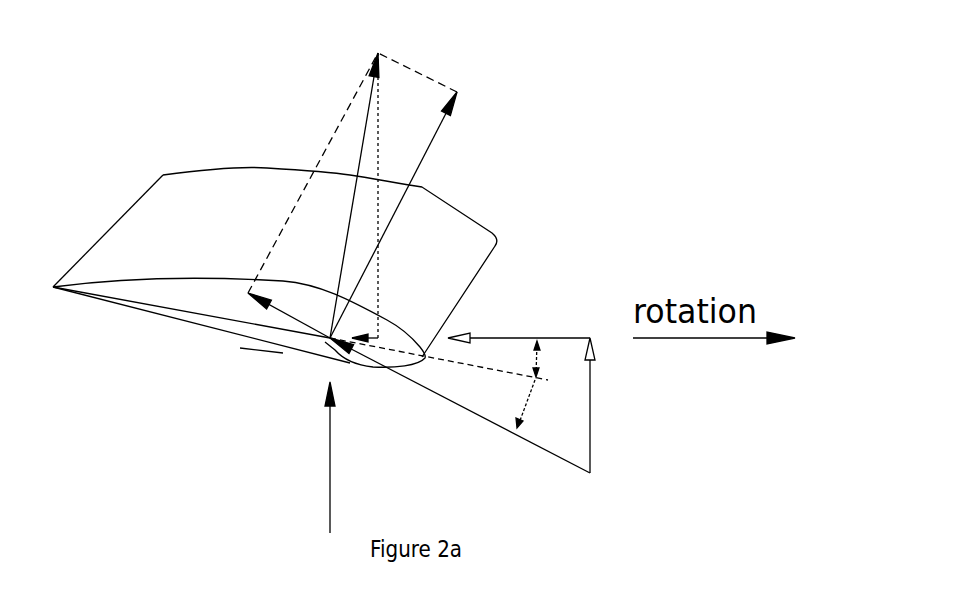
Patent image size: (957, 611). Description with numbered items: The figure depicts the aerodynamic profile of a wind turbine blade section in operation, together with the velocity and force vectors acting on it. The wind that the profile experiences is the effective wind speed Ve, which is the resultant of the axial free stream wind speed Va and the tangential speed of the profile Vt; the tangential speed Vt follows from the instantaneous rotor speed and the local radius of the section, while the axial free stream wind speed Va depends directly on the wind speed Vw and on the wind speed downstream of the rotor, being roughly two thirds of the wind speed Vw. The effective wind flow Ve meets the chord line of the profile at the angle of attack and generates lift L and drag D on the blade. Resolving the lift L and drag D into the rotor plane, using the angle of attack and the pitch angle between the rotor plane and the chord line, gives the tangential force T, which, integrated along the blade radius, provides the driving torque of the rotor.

The lift L is at (447, 129).
The drag D is at (303, 323).
The tangential force T is at (348, 336).
The effective wind speed Ve is at (458, 403).
The tangential speed of the profile Vt is at (522, 336).
The axial free stream wind speed Va is at (593, 418).
The wind speed Vw is at (310, 457).